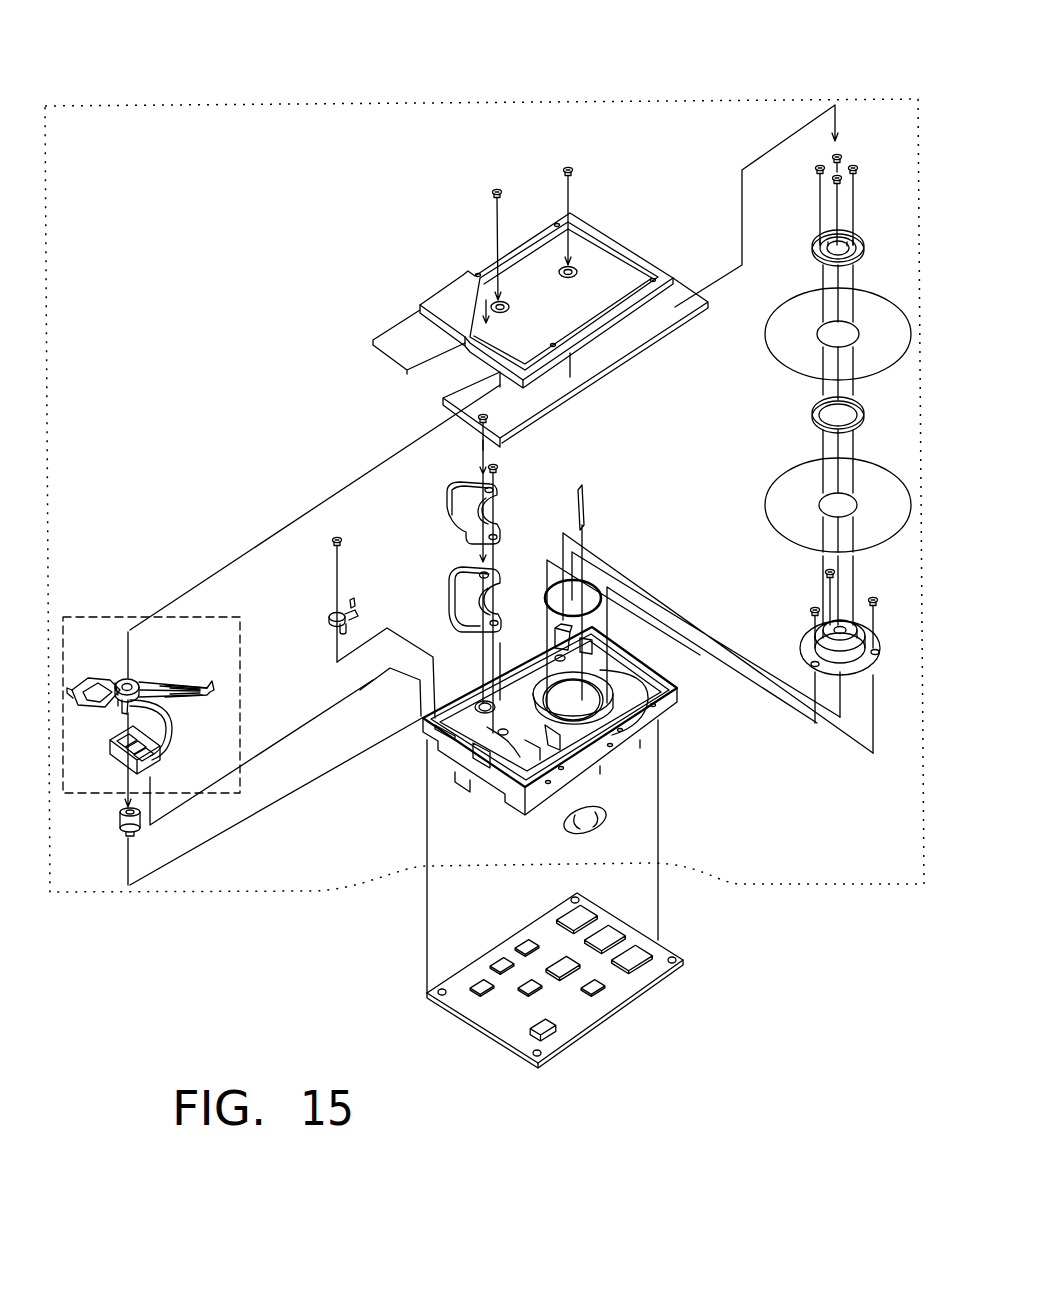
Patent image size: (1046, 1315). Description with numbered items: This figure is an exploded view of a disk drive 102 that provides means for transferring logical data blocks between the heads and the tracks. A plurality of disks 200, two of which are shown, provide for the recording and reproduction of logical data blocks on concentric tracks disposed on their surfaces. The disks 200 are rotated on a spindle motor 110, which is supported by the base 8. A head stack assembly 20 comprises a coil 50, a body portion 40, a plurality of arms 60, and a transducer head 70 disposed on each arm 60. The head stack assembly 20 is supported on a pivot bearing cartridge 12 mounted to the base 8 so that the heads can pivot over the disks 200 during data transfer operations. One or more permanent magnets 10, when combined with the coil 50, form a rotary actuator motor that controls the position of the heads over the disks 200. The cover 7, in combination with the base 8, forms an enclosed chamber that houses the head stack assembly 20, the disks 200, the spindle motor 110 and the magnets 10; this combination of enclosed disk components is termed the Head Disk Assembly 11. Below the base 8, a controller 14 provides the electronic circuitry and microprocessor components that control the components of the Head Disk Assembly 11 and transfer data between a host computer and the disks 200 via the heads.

The disk drive 102 is at (290, 70).
The Head Disk Assembly (HDA) 11 is at (767, 887).
The cover 7 is at (448, 285).
The base 8 is at (673, 718).
The permanent magnets 10 is at (450, 575).
The pivot bearing cartridge 12 is at (120, 828).
The controller 14 is at (607, 1022).
The head stack assembly 20 is at (100, 615).
The body portion 40 is at (137, 681).
The coil 50 is at (112, 702).
The arms 60 is at (173, 692).
The transducer head 70 is at (222, 663).
The spindle motor 110 is at (803, 643).
The disks 200 is at (781, 365).